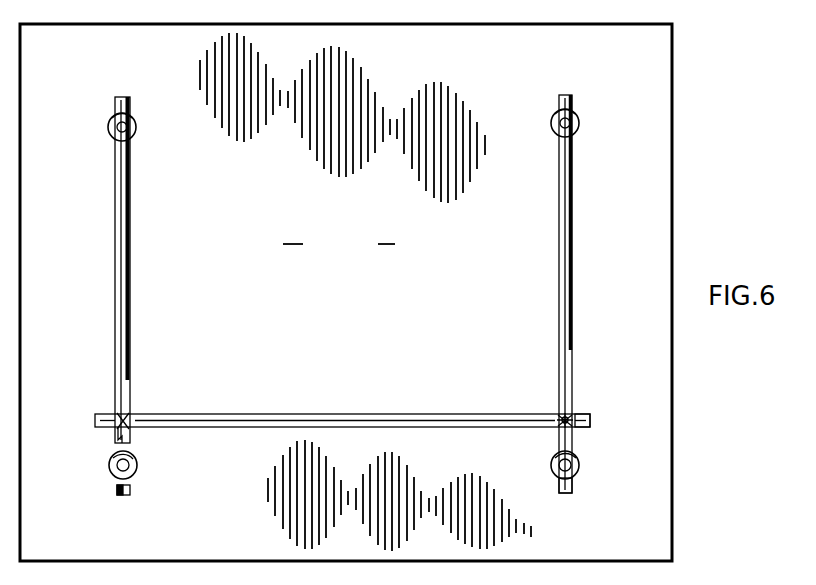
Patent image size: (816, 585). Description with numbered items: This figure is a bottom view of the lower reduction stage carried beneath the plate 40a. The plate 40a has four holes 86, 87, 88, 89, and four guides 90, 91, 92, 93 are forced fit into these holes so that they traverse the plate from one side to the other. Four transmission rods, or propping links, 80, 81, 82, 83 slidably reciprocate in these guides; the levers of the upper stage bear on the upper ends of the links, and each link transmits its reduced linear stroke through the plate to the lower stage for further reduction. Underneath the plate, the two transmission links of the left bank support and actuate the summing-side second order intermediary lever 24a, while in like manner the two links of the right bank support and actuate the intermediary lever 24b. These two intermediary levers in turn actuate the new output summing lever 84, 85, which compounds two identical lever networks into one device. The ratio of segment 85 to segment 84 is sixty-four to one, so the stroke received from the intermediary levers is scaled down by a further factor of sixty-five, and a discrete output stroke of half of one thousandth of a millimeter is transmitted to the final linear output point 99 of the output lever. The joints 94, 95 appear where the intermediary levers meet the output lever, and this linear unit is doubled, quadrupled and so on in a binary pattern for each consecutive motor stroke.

The plate 40a is at (339, 247).
The summing-side second order intermediary lever 24a is at (126, 252).
The summing-side second order intermediary lever 24b is at (568, 254).
The output summing lever segment 84 is at (300, 414).
The transmission rod 80 is at (133, 133).
The transmission rod 82 is at (576, 131).
The transmission rod 81 is at (134, 473).
The transmission rod 83 is at (578, 474).
The hole 86 is at (118, 113).
The hole 88 is at (558, 110).
The hole 87 is at (112, 458).
The hole 89 is at (556, 458).
The guide 90 is at (130, 118).
The guide 92 is at (575, 117).
The guide 91 is at (133, 460).
The guide 93 is at (578, 455).
The left bar crossing joint 94 is at (125, 400).
The right joint pin 95 is at (567, 418).
The final linear output point 99 is at (556, 418).
The output summing lever segment 85 is at (586, 413).